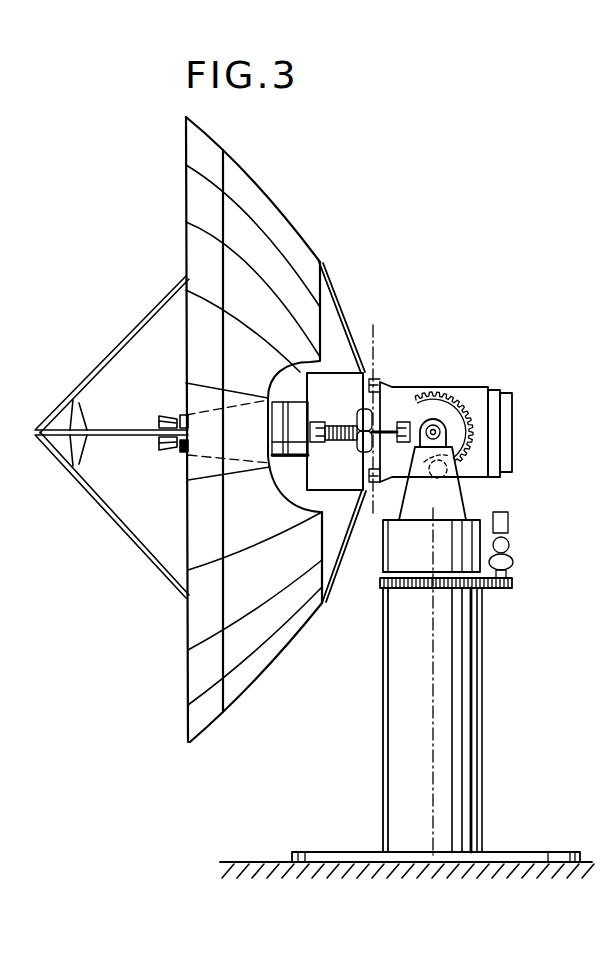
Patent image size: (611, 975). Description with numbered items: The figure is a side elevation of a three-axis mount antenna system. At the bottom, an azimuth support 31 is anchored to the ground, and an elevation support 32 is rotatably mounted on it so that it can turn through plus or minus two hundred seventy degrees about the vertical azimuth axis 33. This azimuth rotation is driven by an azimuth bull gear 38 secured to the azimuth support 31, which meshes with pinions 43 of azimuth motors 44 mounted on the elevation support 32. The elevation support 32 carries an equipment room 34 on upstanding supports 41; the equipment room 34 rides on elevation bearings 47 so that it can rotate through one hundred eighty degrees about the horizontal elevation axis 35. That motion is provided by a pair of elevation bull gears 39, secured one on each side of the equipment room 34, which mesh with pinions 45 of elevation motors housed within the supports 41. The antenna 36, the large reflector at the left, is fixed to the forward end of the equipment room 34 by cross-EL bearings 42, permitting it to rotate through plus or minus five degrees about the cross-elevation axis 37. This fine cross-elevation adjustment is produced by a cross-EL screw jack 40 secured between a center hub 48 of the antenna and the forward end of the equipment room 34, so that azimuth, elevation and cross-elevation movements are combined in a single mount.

The azimuth support 31 is at (484, 725).
The elevation support 32 is at (381, 565).
The azimuth (AZ) axis 33 is at (435, 673).
The equipment room 34 is at (455, 398).
The elevation (EL) axis 35 is at (445, 420).
The antenna 36 is at (305, 243).
The cross-elevation (XEL) axis 37 is at (375, 340).
The azimuth bull gear 38 is at (382, 592).
The elevation bull gears 39 is at (447, 427).
The cross-EL screw jack 40 is at (443, 388).
The upstanding supports 41 is at (465, 483).
The cross-EL bearings 42 is at (388, 428).
The pinions 43 is at (503, 580).
The azimuth motors 44 is at (512, 556).
The pinions 45 is at (440, 490).
The elevation bearings 47 is at (470, 435).
The center hub 48 is at (312, 385).